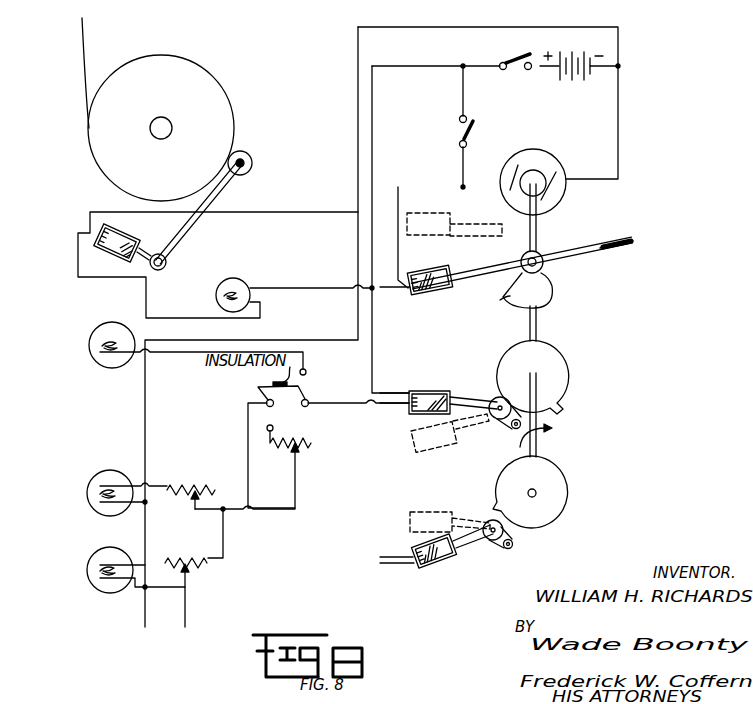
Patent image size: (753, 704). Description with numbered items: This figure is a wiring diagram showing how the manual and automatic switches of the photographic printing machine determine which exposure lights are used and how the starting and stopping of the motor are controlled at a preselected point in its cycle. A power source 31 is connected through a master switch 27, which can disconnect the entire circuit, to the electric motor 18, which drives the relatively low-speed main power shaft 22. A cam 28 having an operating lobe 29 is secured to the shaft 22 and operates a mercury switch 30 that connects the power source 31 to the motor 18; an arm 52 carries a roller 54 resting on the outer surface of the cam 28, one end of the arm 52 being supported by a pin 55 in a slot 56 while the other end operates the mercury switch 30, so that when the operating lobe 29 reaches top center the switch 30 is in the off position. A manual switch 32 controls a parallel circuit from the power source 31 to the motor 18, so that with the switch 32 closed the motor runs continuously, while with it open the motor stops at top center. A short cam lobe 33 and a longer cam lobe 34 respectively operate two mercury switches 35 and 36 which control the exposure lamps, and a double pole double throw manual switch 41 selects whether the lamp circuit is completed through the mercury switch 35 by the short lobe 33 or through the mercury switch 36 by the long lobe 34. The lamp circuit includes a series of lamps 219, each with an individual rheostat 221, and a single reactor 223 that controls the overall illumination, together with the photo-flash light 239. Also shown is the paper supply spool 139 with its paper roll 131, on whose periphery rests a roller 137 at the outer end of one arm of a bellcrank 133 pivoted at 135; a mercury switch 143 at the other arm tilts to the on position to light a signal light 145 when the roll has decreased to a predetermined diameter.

The film strip 131 is at (83, 30).
The paper supply spool 139 is at (226, 118).
The roller 137 is at (252, 164).
The bellcrank 133 is at (182, 240).
The pivot 135 is at (168, 264).
The mercury switch 143 is at (126, 234).
The signal light 145 is at (245, 286).
The photo-flash light 239 is at (89, 345).
The lamps 219 is at (87, 495).
The rheostat 221 is at (178, 473).
The reactor 223 is at (307, 436).
The double pole double throw manual switch 41 is at (308, 393).
The master switch 27 is at (512, 56).
The power source 31 is at (575, 52).
The manual switch 32 is at (476, 128).
The electric motor 18 is at (548, 153).
The roller 54 is at (544, 256).
The arm 52 is at (578, 252).
The slot 56 is at (628, 238).
The pin 55 is at (637, 240).
The mercury switch 30 is at (424, 297).
The cam 28 is at (545, 289).
The operating lobe 29 is at (507, 296).
The main power shaft 22 is at (538, 328).
The short cam lobe 33 is at (559, 408).
The mercury switch 35 is at (430, 392).
The long cam lobe 34 is at (553, 527).
The mercury switch 36 is at (432, 535).